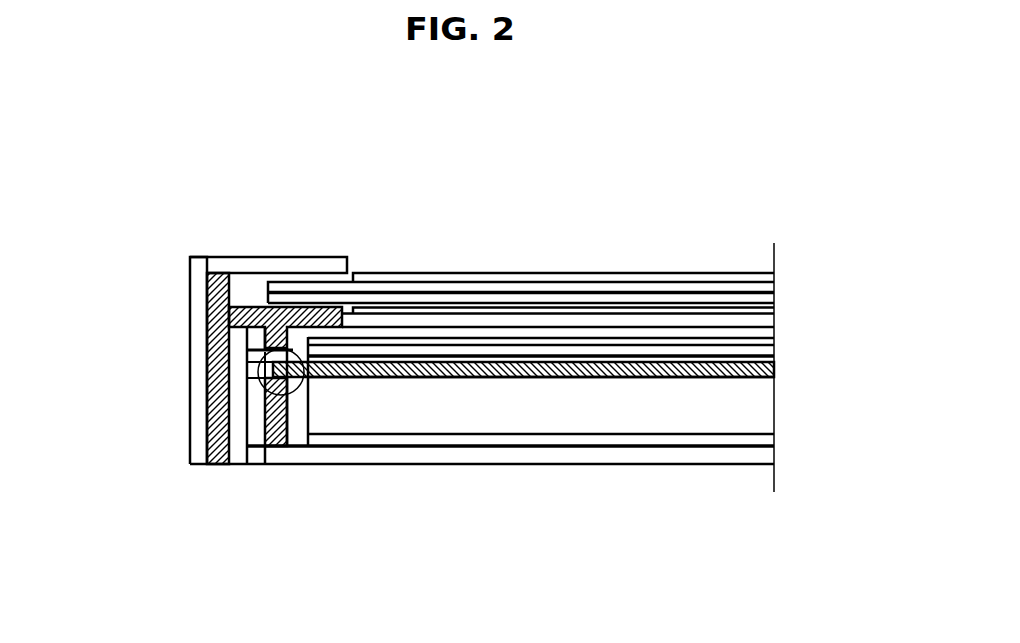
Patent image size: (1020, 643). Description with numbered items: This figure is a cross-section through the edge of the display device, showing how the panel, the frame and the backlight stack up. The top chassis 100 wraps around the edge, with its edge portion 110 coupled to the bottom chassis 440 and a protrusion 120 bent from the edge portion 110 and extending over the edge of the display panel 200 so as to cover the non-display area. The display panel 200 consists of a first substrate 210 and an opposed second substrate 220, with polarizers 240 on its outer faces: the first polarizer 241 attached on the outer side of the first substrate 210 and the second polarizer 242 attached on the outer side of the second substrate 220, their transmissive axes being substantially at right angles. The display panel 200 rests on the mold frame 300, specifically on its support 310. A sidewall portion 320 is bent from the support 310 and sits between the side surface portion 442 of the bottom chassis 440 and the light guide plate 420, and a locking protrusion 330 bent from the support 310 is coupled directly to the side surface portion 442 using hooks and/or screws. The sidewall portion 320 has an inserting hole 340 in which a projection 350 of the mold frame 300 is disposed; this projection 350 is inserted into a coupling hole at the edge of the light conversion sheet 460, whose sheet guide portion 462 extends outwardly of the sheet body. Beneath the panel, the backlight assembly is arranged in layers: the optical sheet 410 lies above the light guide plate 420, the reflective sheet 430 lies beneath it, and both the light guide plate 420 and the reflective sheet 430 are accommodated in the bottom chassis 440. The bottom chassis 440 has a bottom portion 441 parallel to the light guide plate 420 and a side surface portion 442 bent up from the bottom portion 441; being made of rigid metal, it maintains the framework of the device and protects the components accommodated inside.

The top chassis 100 is at (270, 173).
The edge portion 110 is at (193, 350).
The protrusion 120 is at (267, 268).
The display panel 200 is at (507, 207).
The first substrate 210 is at (503, 302).
The second substrate 220 is at (413, 290).
The polarizers 240 is at (683, 207).
The first polarizer 241 is at (682, 310).
The second polarizer 242 is at (590, 280).
The mold frame 300 is at (92, 315).
The support 310 is at (240, 311).
The sidewall portion 320 is at (270, 415).
The locking protrusion 330 is at (217, 400).
The inserting hole 340 is at (256, 352).
The projection 350 is at (266, 367).
The optical sheet 410 is at (782, 337).
The light guide plate 420 is at (763, 408).
The reflective sheet 430 is at (763, 443).
The bottom chassis 440 is at (372, 533).
The bottom portion 441 is at (367, 453).
The side surface portion 442 is at (243, 427).
The light conversion sheet 460 is at (770, 368).
The sheet guide portion 462 is at (287, 349).